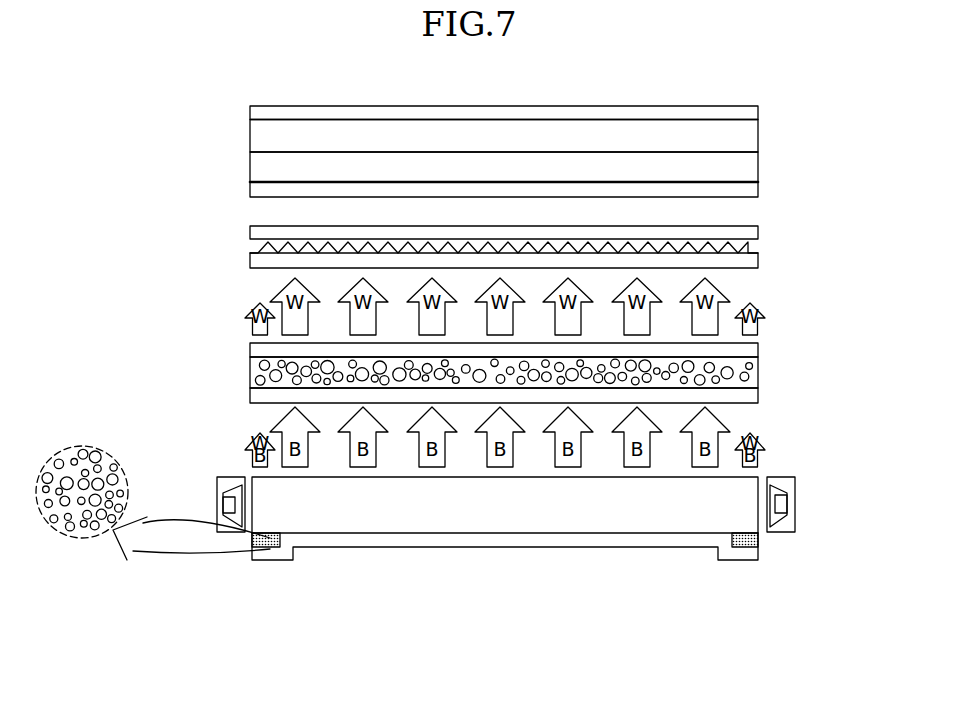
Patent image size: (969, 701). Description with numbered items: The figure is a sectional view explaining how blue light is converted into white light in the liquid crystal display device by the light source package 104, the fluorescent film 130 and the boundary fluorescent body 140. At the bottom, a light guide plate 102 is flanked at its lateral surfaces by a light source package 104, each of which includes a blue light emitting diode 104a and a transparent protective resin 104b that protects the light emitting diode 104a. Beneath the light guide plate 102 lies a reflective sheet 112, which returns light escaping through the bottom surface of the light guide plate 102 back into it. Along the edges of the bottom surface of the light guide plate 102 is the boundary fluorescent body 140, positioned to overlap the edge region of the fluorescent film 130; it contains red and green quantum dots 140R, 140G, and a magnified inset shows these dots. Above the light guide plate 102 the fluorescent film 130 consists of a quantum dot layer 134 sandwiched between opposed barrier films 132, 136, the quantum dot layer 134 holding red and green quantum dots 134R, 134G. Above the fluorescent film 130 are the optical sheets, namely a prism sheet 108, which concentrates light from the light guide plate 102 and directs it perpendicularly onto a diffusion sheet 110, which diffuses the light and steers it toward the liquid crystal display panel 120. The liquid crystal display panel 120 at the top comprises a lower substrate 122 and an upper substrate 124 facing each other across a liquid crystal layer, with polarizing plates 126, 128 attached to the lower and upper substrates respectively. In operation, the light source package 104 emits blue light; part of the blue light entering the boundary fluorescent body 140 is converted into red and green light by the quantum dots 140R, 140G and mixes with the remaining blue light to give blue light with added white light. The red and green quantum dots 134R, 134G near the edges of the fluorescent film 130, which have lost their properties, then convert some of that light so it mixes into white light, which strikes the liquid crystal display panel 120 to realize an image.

The light guide plate 102 is at (498, 521).
The light source package 104 is at (798, 565).
The light emitting diode 104a is at (788, 515).
The protective resin 104b is at (772, 530).
The prism sheet 108 is at (752, 259).
The diffusion sheet 110 is at (752, 233).
The reflective sheet 112 is at (580, 542).
The liquid crystal display panel 120 is at (577, 150).
The lower substrate 122 is at (752, 163).
The upper substrate 124 is at (752, 132).
The polarizing plate 126 is at (752, 185).
The polarizing plate 128 is at (752, 110).
The fluorescent film 130 is at (534, 374).
The barrier film 132 is at (752, 392).
The quantum dot layer 134 is at (504, 372).
The red quantum dots 134R is at (258, 367).
The green quantum dots 134G is at (255, 384).
The barrier film 136 is at (752, 347).
The boundary fluorescent body 140 is at (740, 547).
The green quantum dots 140G is at (117, 482).
The red quantum dots 140R is at (86, 529).